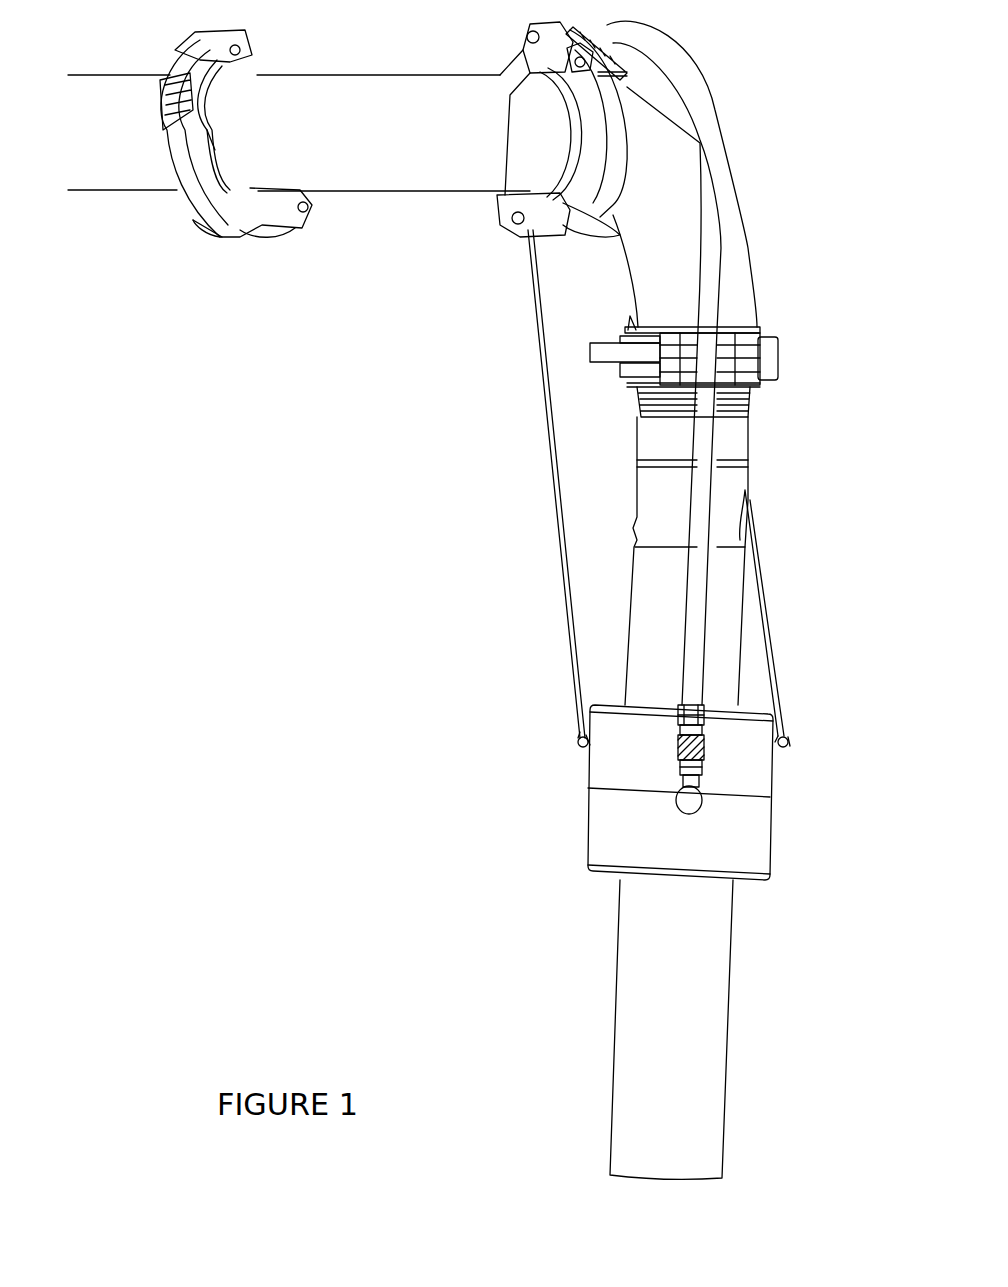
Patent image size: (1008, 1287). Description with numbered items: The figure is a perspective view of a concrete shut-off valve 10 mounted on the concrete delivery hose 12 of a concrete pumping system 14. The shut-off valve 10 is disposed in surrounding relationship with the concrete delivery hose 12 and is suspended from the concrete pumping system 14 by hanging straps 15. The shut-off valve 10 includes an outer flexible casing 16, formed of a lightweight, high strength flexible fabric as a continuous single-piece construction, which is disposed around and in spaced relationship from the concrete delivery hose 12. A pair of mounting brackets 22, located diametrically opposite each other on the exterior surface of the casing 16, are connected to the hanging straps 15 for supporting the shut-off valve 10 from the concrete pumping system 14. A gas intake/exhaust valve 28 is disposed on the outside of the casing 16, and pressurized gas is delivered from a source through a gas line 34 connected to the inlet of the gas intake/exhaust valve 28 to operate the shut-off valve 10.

The concrete shut-off valve 10 is at (656, 600).
The concrete delivery hose 12 is at (648, 1022).
The concrete pumping system 14 is at (463, 222).
The hanging straps 15 is at (553, 475).
The outer flexible casing 16 is at (620, 840).
The mounting brackets 22 is at (578, 738).
The gas intake/exhaust valve 28 is at (663, 807).
The gas line 34 is at (707, 290).